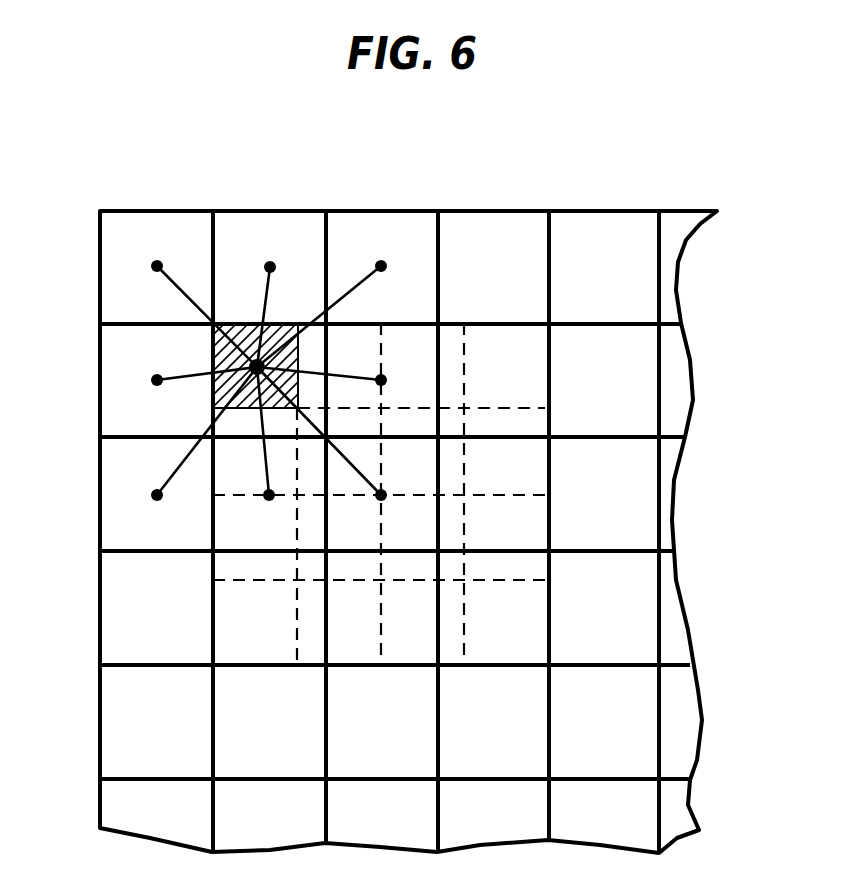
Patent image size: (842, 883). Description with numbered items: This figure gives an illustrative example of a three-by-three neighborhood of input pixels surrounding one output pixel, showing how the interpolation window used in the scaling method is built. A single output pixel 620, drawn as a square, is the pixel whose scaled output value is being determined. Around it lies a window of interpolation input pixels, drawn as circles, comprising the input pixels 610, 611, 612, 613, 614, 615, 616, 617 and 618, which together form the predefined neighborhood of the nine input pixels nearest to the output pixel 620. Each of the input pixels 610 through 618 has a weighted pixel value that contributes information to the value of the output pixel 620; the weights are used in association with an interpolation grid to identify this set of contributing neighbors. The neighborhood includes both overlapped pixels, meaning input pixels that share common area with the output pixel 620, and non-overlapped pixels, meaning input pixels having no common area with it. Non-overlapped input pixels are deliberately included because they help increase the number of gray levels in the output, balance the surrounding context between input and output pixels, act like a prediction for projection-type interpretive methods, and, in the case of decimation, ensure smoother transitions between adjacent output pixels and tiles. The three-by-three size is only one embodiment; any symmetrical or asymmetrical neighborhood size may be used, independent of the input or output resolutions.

The interpolation input pixel 610 is at (110, 248).
The interpolation input pixel 611 is at (242, 218).
The interpolation input pixel 612 is at (403, 218).
The interpolation input pixel 613 is at (318, 342).
The interpolation input pixel 614 is at (408, 332).
The interpolation input pixel 615 is at (110, 345).
The interpolation input pixel 616 is at (110, 470).
The interpolation input pixel 617 is at (268, 545).
The interpolation input pixel 618 is at (363, 547).
The output pixel 620 is at (240, 320).